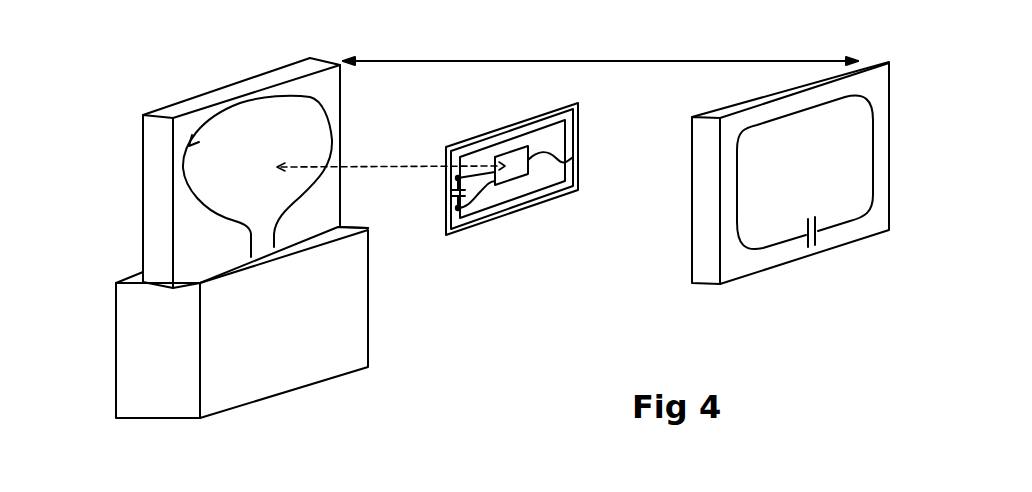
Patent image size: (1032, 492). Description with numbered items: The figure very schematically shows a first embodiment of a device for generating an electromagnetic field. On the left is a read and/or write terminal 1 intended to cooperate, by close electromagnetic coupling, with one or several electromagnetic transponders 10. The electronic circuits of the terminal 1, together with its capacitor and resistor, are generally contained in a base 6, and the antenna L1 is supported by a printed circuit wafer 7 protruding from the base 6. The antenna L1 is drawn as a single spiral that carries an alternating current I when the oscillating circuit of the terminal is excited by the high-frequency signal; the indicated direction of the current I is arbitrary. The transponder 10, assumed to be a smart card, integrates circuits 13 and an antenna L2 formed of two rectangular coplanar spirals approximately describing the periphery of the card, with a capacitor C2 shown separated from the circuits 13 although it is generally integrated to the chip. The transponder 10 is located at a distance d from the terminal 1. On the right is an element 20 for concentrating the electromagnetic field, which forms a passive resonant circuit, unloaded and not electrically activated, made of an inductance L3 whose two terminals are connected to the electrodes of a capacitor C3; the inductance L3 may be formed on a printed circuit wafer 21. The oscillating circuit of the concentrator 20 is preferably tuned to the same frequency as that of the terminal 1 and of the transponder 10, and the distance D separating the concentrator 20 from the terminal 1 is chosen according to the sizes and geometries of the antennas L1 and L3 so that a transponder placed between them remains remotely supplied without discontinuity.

The terminal 1 is at (108, 313).
The base 6 is at (370, 296).
The printed circuit wafer 7 is at (157, 157).
The antenna L1 is at (247, 103).
The current I is at (197, 154).
The distance d is at (370, 163).
The distance D is at (572, 60).
The transponder 10 is at (540, 208).
The antenna L2 is at (497, 132).
The circuits 13 is at (570, 158).
The capacitor C2 is at (465, 195).
The element for concentrating the electromagnetic field 20 is at (784, 278).
The printed circuit wafer 21 is at (707, 198).
The inductance L3 is at (797, 113).
The capacitor C3 is at (794, 227).